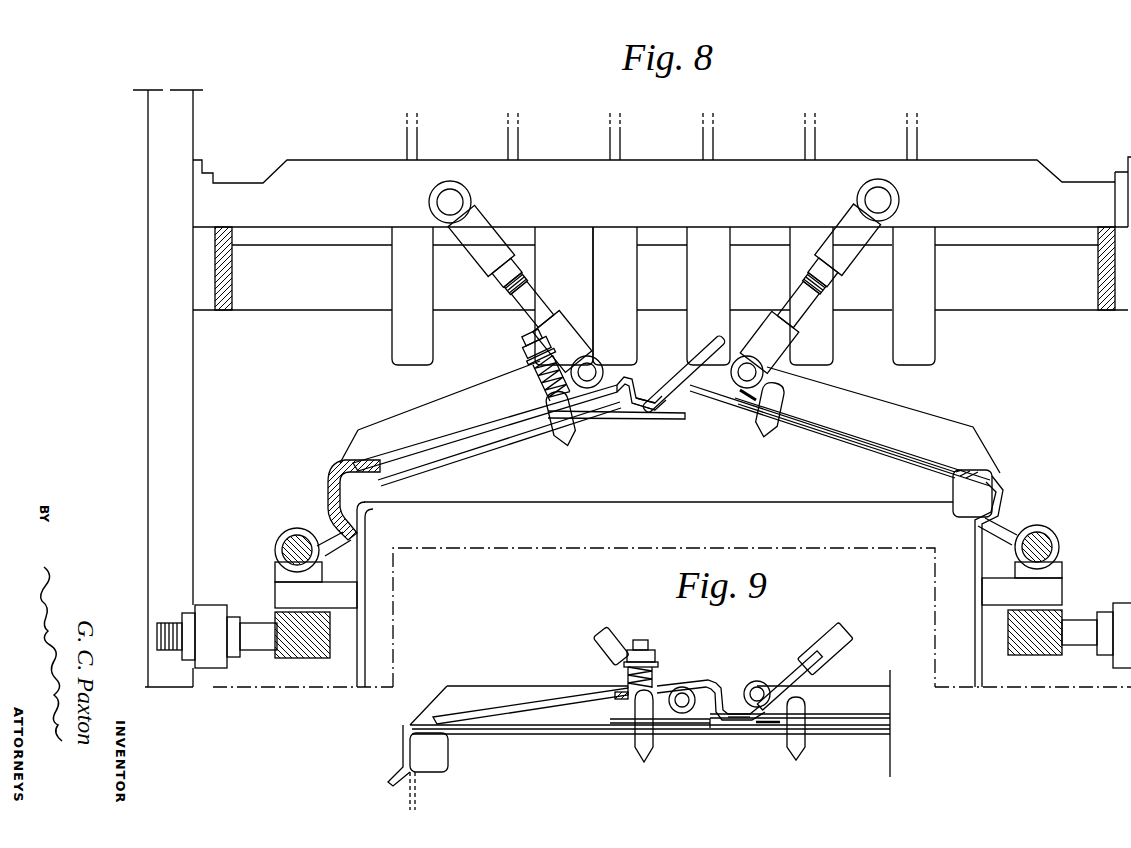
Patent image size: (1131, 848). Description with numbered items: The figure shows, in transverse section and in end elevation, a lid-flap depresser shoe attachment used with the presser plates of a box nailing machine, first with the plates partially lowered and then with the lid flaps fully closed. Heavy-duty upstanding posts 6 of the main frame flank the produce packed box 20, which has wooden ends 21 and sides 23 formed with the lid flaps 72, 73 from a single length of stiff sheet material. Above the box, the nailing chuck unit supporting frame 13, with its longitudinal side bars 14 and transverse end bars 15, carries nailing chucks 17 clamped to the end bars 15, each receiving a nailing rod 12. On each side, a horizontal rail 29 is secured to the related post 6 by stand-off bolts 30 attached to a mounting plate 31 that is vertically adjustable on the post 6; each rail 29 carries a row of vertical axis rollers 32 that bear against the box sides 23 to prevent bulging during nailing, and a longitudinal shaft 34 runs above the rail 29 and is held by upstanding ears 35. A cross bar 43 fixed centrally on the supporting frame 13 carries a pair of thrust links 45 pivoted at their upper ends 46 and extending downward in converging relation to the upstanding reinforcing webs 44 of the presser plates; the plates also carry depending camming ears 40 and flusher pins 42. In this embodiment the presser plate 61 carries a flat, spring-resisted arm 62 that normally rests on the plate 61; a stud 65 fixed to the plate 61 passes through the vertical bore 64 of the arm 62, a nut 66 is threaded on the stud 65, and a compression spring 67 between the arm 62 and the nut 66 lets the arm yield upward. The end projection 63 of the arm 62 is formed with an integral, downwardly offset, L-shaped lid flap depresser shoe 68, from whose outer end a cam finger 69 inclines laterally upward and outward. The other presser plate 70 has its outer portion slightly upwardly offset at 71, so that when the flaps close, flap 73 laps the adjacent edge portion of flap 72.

In FIG. 8, the upstanding post 6 is at (155, 355).
In FIG. 8, the nailing rod 12 is at (912, 143).
In FIG. 8, the nailing chuck unit supporting frame 13 is at (310, 315).
In FIG. 8, the longitudinal side bar 14 is at (234, 280).
In FIG. 8, the transverse end bar 15 is at (362, 298).
In FIG. 8, the nailing chuck 17 is at (903, 327).
In FIG. 8, the produce packed box 20 is at (672, 500).
In FIG. 9, the produce packed box 20 is at (407, 793).
In FIG. 8, the wooden box end 21 is at (723, 520).
In FIG. 8, the box side 23 is at (368, 538).
In FIG. 8, the horizontal rail 29 is at (307, 650).
In FIG. 8, the stand-off bolt 30 is at (262, 627).
In FIG. 8, the mounting plate 31 is at (207, 613).
In FIG. 8, the vertical axis roller 32 is at (287, 594).
In FIG. 8, the longitudinal shaft 34 is at (290, 533).
In FIG. 8, the upstanding ear 35 is at (280, 574).
In FIG. 8, the camming ear 40 is at (378, 483).
In FIG. 9, the camming ear 40 is at (438, 768).
In FIG. 8, the flusher pin 42 is at (561, 442).
In FIG. 9, the flusher pin 42 is at (643, 750).
In FIG. 8, the cross bar 43 is at (640, 180).
In FIG. 8, the reinforcing web 44 is at (412, 420).
In FIG. 9, the reinforcing web 44 is at (457, 695).
In FIG. 8, the thrust link 45 is at (532, 296).
In FIG. 9, the thrust link 45 is at (595, 640).
In FIG. 8, the upper pivot of thrust link 46 is at (455, 200).
In FIG. 8, the presser plate 61 is at (503, 430).
In FIG. 9, the presser plate 61 is at (507, 727).
In FIG. 8, the upwardly yieldable arm 62 is at (445, 437).
In FIG. 9, the upwardly yieldable arm 62 is at (547, 702).
In FIG. 8, the end projection of arm 63 is at (619, 378).
In FIG. 9, the end projection of arm 63 is at (708, 680).
In FIG. 9, the vertical bore 64 is at (623, 700).
In FIG. 8, the stud 65 is at (525, 364).
In FIG. 9, the stud 65 is at (635, 703).
In FIG. 8, the nut 66 is at (528, 342).
In FIG. 9, the nut 66 is at (653, 648).
In FIG. 8, the compression spring 67 is at (540, 378).
In FIG. 9, the compression spring 67 is at (653, 677).
In FIG. 8, the lid flap depresser shoe 68 is at (653, 409).
In FIG. 9, the lid flap depresser shoe 68 is at (740, 714).
In FIG. 8, the cam finger 69 is at (710, 356).
In FIG. 9, the cam finger 69 is at (783, 687).
In FIG. 8, the other presser plate 70 is at (880, 440).
In FIG. 9, the other presser plate 70 is at (867, 727).
In FIG. 8, the upwardly offset portion 71 is at (745, 400).
In FIG. 9, the upwardly offset portion 71 is at (765, 722).
In FIG. 8, the lid flap 72 is at (605, 420).
In FIG. 9, the lid flap 72 is at (705, 733).
In FIG. 8, the lapping lid flap 73 is at (838, 446).
In FIG. 9, the lapping lid flap 73 is at (833, 735).